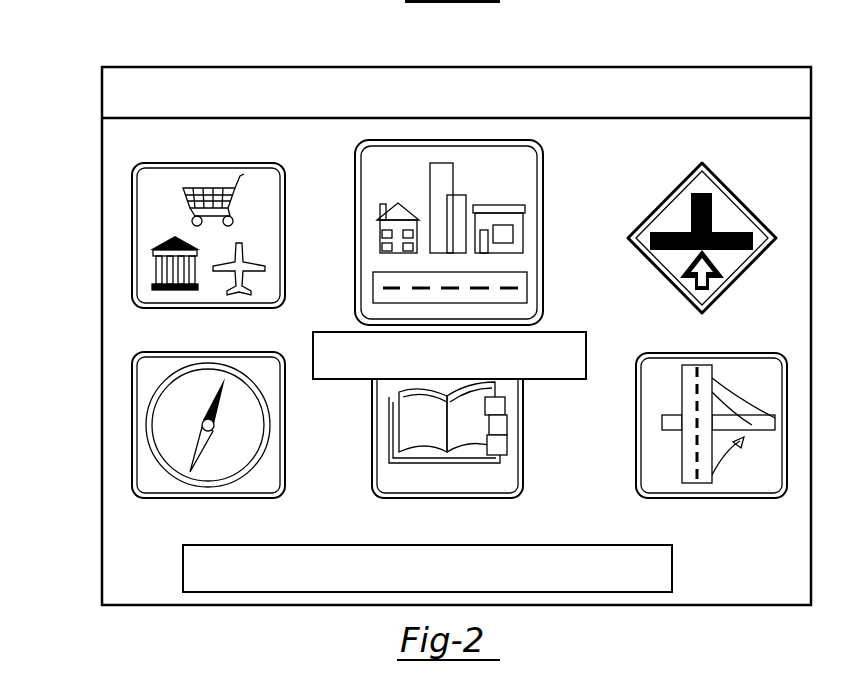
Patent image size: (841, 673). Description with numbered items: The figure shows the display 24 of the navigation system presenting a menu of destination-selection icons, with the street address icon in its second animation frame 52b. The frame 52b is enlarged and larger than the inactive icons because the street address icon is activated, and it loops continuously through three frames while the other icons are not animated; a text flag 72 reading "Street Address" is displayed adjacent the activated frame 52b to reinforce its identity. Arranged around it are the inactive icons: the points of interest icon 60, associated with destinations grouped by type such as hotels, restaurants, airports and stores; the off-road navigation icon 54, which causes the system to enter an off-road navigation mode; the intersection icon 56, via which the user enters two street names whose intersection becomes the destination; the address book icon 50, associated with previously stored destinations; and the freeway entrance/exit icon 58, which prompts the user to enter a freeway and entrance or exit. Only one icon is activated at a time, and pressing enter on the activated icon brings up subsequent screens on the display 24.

The display 24 is at (221, 60).
The points of interest icon 60 is at (132, 212).
The street address icon frame 52b is at (546, 218).
The intersection icon 56 is at (735, 200).
The off-road navigation icon 54 is at (132, 420).
The address book icon 50 is at (523, 433).
The text flag 72 is at (562, 332).
The freeway entrance/exit icon 58 is at (668, 353).